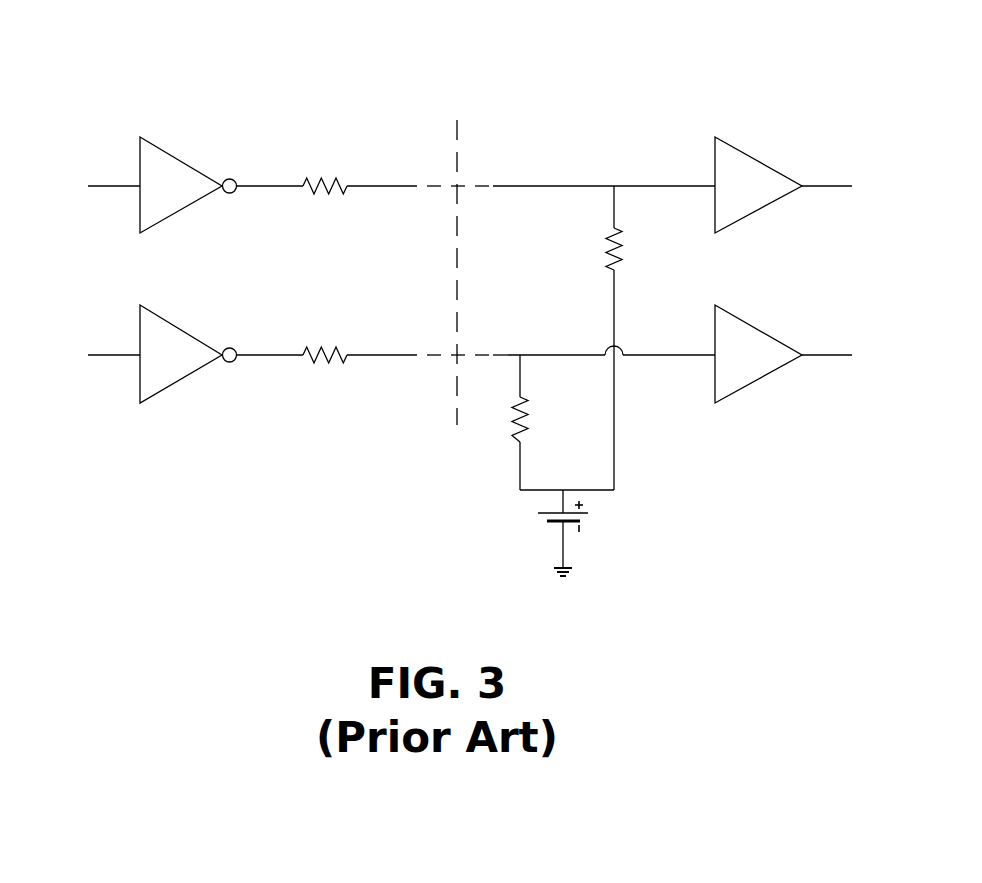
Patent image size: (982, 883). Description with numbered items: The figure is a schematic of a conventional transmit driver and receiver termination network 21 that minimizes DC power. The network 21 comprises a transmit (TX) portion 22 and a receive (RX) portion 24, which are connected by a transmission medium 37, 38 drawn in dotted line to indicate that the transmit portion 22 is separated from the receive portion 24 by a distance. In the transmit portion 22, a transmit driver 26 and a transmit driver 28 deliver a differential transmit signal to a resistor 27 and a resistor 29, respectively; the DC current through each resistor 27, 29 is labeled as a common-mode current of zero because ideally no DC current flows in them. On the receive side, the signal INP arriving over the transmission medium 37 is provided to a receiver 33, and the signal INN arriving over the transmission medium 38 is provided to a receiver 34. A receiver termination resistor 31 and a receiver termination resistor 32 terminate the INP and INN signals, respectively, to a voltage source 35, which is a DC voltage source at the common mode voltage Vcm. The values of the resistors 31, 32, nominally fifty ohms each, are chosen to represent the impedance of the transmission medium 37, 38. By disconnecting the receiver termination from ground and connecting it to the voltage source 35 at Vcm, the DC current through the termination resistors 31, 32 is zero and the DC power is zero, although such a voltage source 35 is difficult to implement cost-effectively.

The network 21 is at (127, 42).
The transmit portion 22 is at (327, 68).
The receive portion 24 is at (562, 68).
The transmit driver 26 is at (158, 145).
The resistor 27 is at (325, 173).
The transmit driver 28 is at (158, 313).
The resistor 29 is at (320, 345).
The receiver termination resistor 31 is at (610, 253).
The receiver termination resistor 32 is at (527, 415).
The receiver 33 is at (743, 152).
The receiver 34 is at (743, 320).
The voltage source 35 is at (557, 522).
The transmission medium 37 is at (465, 187).
The transmission medium 38 is at (453, 353).